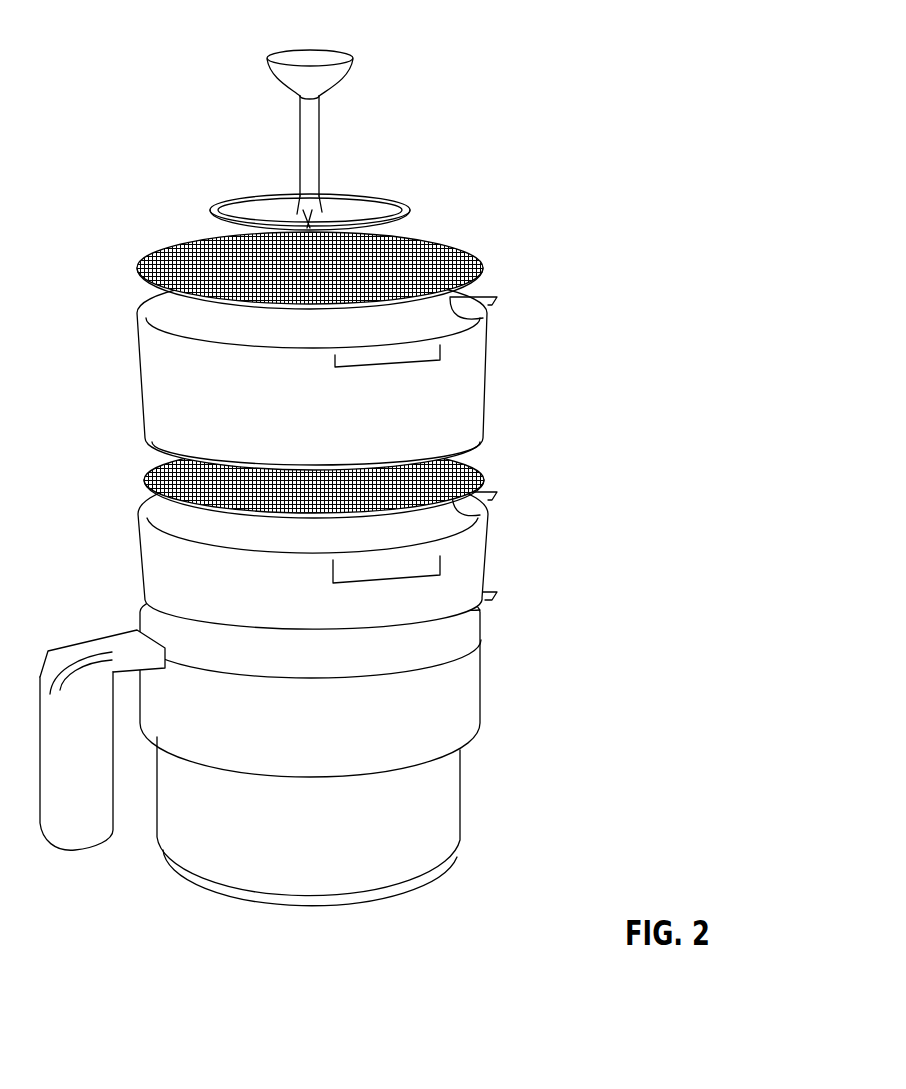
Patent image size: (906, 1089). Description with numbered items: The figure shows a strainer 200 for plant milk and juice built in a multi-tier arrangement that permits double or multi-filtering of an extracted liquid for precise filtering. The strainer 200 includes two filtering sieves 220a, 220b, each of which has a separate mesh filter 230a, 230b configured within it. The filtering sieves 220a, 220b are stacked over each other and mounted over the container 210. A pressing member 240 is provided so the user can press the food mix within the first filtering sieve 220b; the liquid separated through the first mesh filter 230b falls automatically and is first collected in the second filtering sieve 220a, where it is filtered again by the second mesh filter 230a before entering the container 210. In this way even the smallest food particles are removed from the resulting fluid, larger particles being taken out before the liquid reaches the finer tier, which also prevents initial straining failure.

The strainer 200 is at (608, 163).
The container 210 is at (480, 687).
The second filtering sieve 220a is at (470, 572).
The first filtering sieve 220b is at (475, 382).
The second mesh filter 230a is at (472, 465).
The first mesh filter 230b is at (473, 267).
The pressing member 240 is at (318, 137).